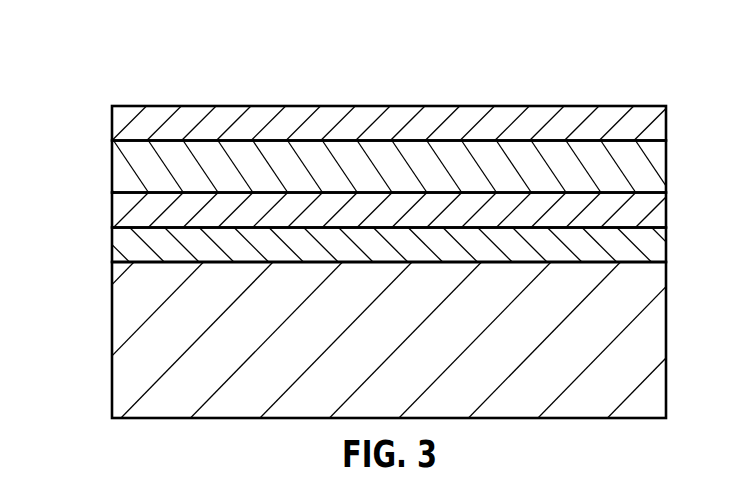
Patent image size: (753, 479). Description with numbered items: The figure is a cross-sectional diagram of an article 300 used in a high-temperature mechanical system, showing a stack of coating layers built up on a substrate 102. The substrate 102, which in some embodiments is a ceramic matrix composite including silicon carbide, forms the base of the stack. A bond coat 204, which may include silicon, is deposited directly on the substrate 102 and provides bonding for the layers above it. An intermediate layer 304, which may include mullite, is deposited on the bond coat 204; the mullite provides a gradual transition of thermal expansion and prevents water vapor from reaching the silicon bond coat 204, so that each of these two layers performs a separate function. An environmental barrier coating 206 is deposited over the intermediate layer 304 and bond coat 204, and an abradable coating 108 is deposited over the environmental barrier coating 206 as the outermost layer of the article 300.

The article 300 is at (125, 31).
The abradable coating 108 is at (130, 131).
The environmental barrier coating 206 is at (130, 174).
The intermediate layer 304 is at (130, 216).
The bond coat 204 is at (130, 247).
The substrate 102 is at (130, 363).